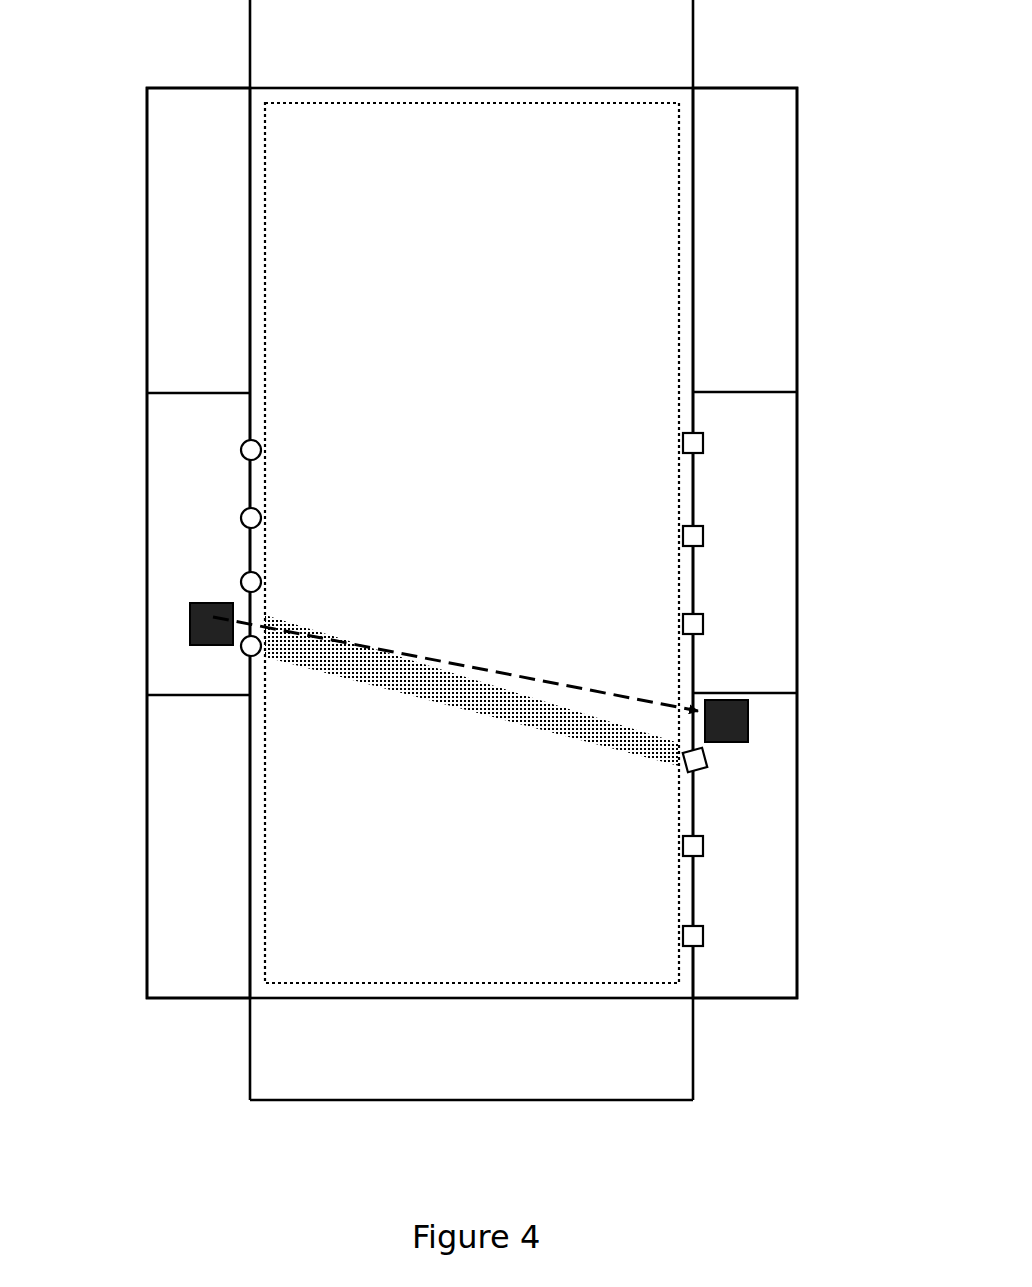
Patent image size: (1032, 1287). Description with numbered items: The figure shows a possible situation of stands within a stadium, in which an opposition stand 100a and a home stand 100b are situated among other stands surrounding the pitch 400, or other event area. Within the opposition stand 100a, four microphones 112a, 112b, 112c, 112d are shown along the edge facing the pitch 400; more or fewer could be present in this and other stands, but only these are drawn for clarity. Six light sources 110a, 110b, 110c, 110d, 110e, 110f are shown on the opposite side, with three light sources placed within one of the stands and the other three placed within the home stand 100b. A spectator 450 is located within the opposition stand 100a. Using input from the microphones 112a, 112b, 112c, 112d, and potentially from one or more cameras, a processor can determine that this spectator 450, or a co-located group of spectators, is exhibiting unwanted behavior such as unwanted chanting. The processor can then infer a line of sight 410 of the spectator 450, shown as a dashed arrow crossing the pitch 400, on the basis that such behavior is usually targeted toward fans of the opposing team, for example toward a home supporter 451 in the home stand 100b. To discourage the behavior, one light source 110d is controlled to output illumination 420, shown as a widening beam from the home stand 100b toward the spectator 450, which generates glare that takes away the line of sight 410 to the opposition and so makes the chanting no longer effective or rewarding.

The opposition stand 100a is at (147, 505).
The home stand 100b is at (797, 737).
The light source 110a is at (703, 443).
The light source 110b is at (703, 536).
The light source 110c is at (703, 624).
The light source 110d is at (706, 760).
The light source 110e is at (703, 846).
The light source 110f is at (703, 936).
The microphone 112a is at (244, 443).
The microphone 112b is at (244, 511).
The microphone 112c is at (244, 576).
The microphone 112d is at (243, 653).
The pitch 400 is at (630, 103).
The line of sight 410 is at (473, 668).
The illumination 420 is at (507, 722).
The spectator 450 is at (190, 637).
The home supporter 451 is at (748, 705).